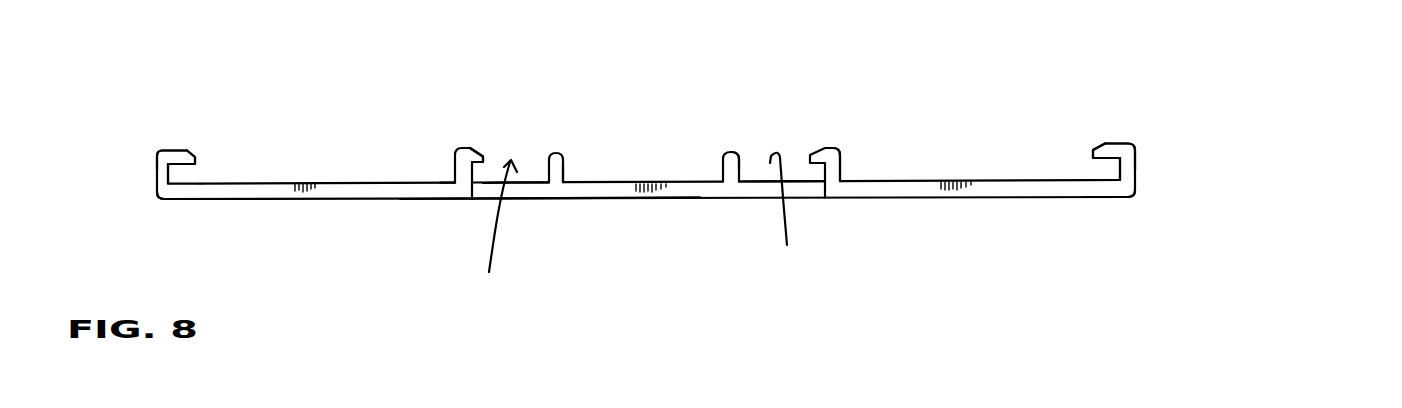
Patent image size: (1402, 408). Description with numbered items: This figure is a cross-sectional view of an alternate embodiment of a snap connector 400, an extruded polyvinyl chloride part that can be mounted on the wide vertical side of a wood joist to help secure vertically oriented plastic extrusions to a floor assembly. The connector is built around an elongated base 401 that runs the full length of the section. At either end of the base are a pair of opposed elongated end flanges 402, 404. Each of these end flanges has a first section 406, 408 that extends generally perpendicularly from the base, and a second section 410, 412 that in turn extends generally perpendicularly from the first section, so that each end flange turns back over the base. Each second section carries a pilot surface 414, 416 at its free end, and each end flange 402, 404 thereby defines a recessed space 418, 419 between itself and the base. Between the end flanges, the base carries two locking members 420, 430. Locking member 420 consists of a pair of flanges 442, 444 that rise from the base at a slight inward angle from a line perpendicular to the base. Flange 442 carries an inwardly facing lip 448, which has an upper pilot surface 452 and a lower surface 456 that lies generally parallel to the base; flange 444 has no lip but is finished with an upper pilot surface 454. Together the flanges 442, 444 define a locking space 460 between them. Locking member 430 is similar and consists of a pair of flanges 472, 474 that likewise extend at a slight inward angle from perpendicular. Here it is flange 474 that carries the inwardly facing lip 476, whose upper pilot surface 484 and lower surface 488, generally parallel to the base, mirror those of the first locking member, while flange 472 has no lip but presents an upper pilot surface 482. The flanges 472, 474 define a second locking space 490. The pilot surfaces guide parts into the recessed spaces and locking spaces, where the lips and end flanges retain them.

The snap connector 400 is at (958, 120).
The elongated base 401 is at (982, 198).
The end flange 402 is at (165, 196).
The end flange 404 is at (1136, 193).
The first section 406 is at (190, 172).
The first section 408 is at (1117, 174).
The second section 410 is at (183, 150).
The second section 412 is at (1115, 142).
The pilot surface 414 is at (168, 150).
The pilot surface 416 is at (1102, 147).
The recessed space 418 is at (192, 182).
The recessed space 419 is at (1108, 167).
The locking member 420 is at (498, 137).
The locking member 430 is at (780, 138).
The flange 442 is at (455, 175).
The flange 444 is at (567, 167).
The inwardly facing lip 448 is at (457, 152).
The upper pilot surface 452 is at (466, 148).
The upper pilot surface 454 is at (551, 158).
The lower surface 456 is at (474, 163).
The locking space 460 is at (514, 220).
The flange 472 is at (720, 168).
The flange 474 is at (841, 170).
The inwardly facing lip 476 is at (841, 152).
The upper pilot surface 482 is at (737, 152).
The upper pilot surface 484 is at (820, 148).
The lower surface 488 is at (823, 165).
The locking space 490 is at (799, 209).